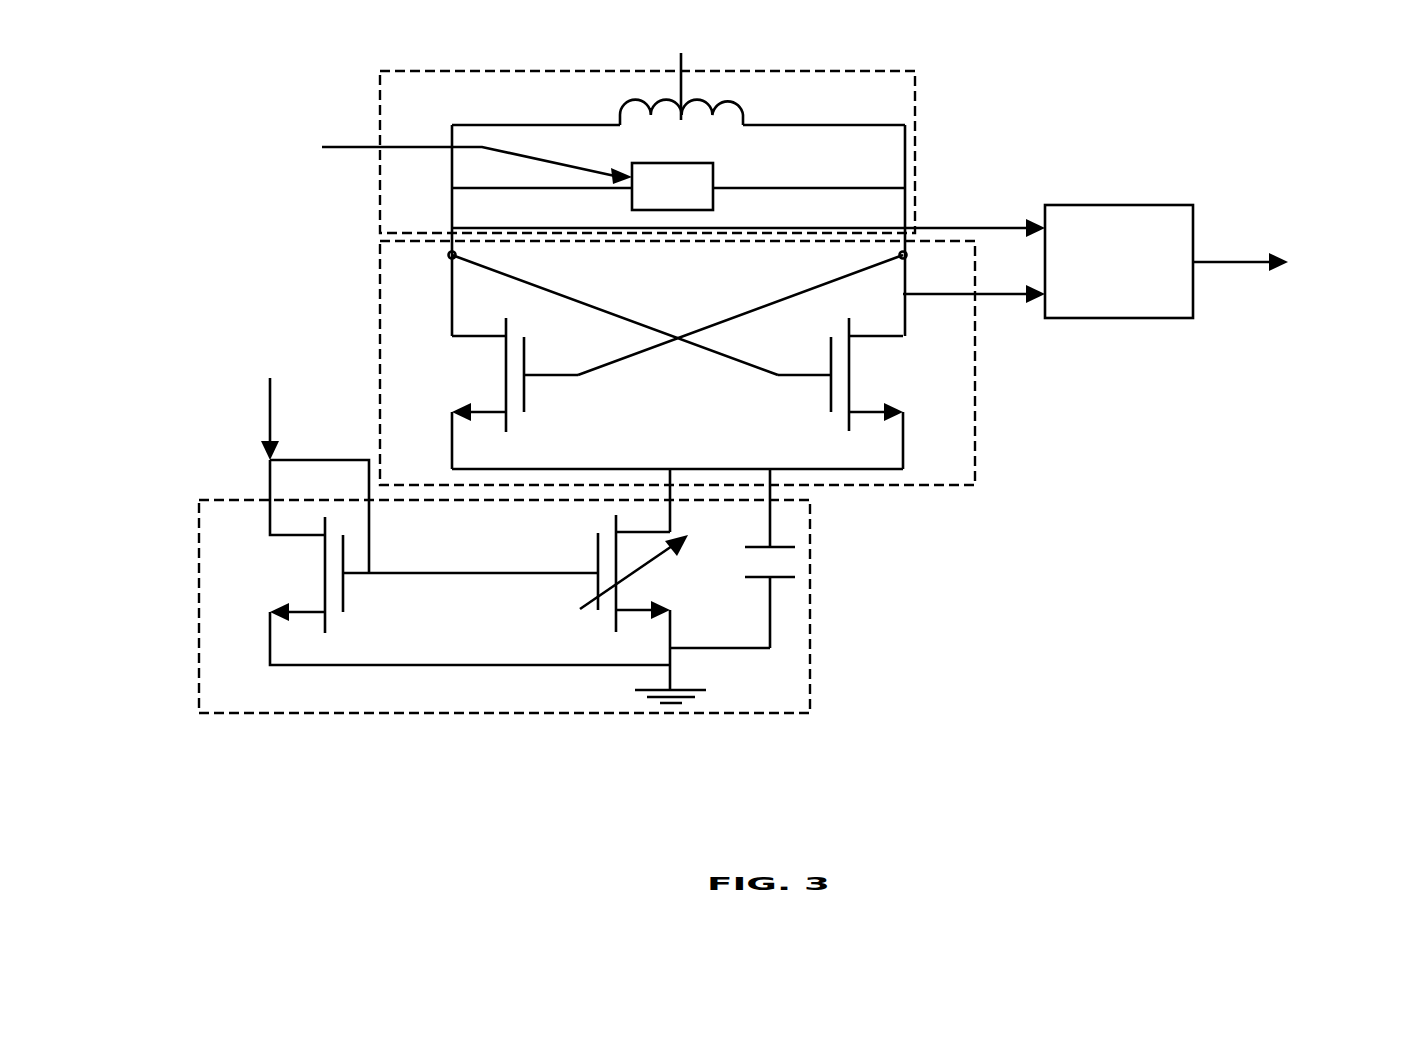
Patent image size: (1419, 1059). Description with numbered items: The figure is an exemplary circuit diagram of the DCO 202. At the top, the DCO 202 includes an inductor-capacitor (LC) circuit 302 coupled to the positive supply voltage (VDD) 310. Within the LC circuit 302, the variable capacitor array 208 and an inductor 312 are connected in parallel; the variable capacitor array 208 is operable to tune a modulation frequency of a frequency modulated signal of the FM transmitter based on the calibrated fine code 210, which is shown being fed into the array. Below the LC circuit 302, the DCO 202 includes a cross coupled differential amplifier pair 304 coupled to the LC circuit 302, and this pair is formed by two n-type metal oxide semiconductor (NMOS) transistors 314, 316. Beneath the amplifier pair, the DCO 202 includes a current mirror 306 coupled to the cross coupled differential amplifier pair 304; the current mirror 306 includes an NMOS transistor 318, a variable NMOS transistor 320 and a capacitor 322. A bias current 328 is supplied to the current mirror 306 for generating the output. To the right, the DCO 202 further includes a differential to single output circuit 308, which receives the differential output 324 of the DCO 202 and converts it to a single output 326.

The inductor-capacitor (LC) circuit 302 is at (852, 71).
The positive supply voltage (VDD) 310 is at (680, 73).
The inductor 312 is at (745, 118).
The variable capacitor array 208 is at (713, 180).
The calibrated fine code 210 is at (342, 148).
The cross coupled differential amplifier pair 304 is at (975, 383).
The NMOS transistor 314 is at (506, 358).
The NMOS transistor 316 is at (849, 385).
The differential output 324 is at (985, 228).
The differential to single output circuit 308 is at (1170, 307).
The single output 326 is at (1230, 260).
The bias current 328 is at (268, 405).
The current mirror 306 is at (505, 713).
The NMOS transistor 318 is at (325, 556).
The variable NMOS transistor 320 is at (598, 553).
The capacitor 322 is at (795, 548).
The DCO 202 is at (1020, 758).